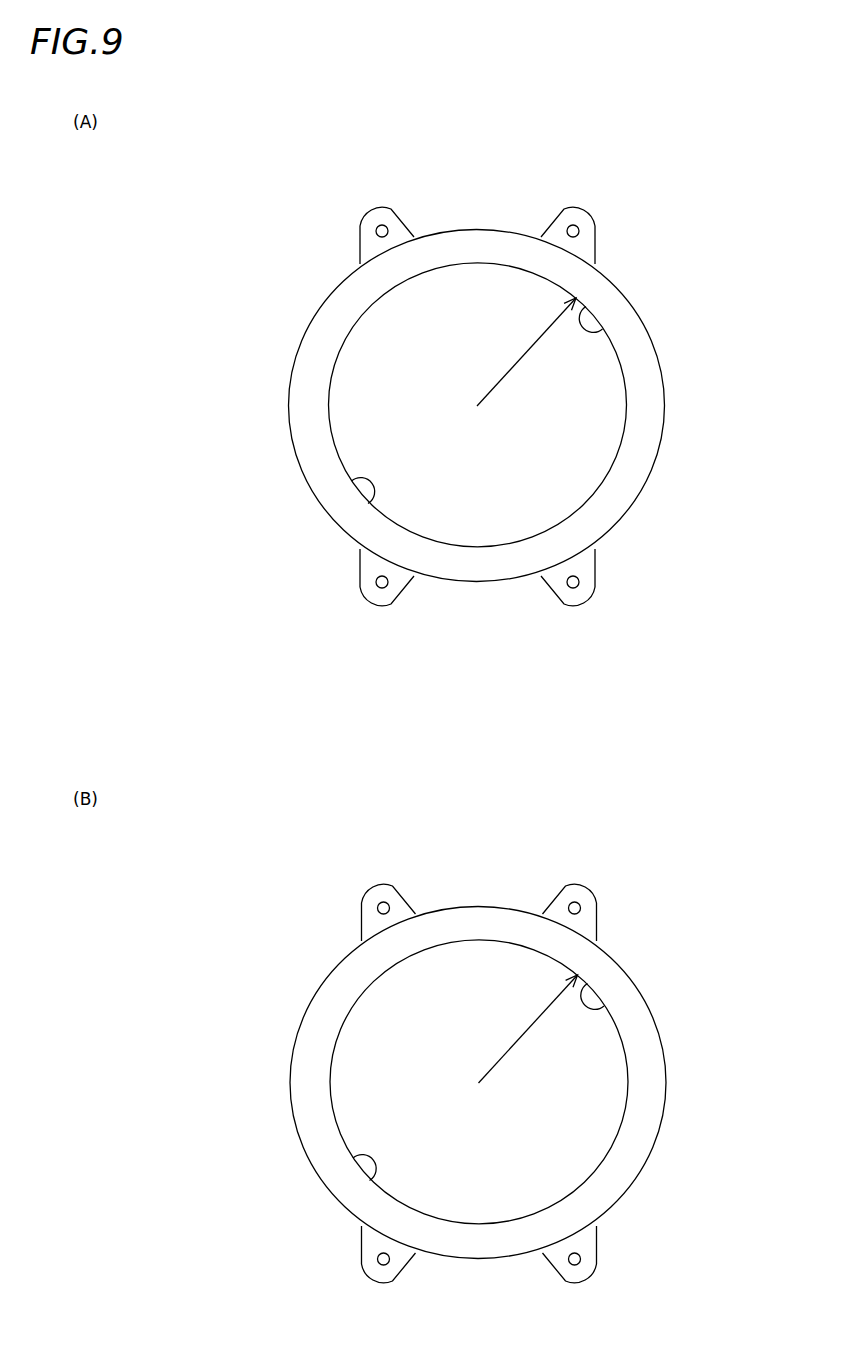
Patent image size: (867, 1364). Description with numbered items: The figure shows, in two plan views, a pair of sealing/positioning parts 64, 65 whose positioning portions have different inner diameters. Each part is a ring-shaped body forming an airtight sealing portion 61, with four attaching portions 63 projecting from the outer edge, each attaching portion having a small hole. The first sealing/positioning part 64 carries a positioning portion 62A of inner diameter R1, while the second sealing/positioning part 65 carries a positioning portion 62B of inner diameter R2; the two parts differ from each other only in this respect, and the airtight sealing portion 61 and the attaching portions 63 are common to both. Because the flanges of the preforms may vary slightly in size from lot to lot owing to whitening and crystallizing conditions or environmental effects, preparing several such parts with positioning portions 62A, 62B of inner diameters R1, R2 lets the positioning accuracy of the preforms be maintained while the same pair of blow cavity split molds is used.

The airtight sealing portion 61 is at (328, 320).
The positioning portion 62A is at (606, 331).
The positioning portion 62B is at (485, 1085).
The attaching portion 63 is at (360, 233).
The sealing/positioning part 64 is at (694, 197).
The sealing/positioning part 65 is at (492, 1028).
The inner diameter R1 is at (526, 352).
The inner diameter R2 is at (528, 1029).